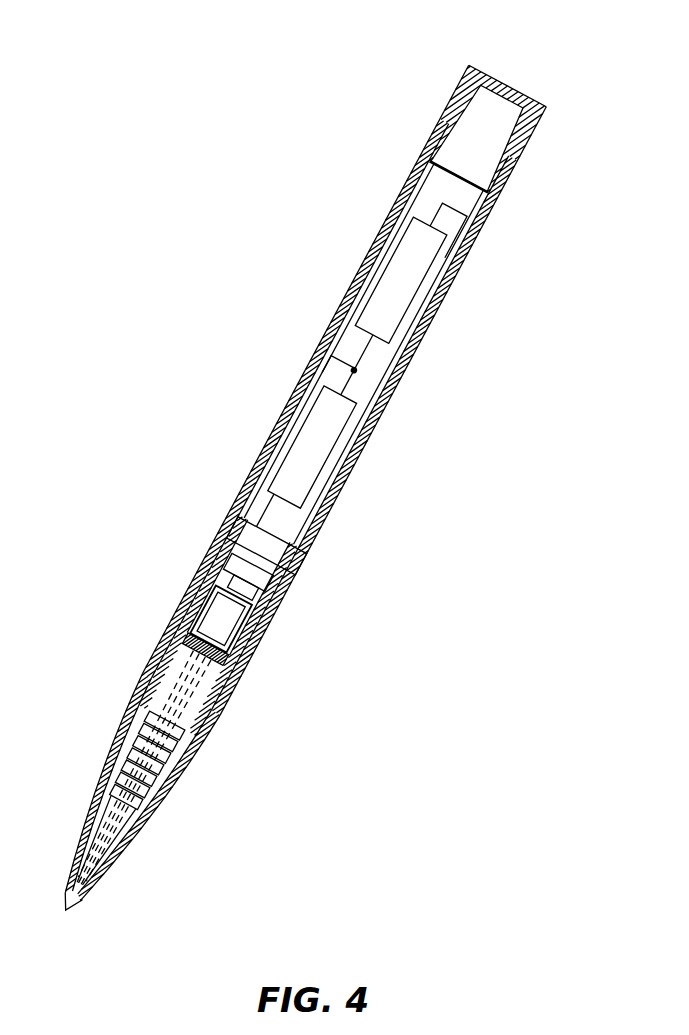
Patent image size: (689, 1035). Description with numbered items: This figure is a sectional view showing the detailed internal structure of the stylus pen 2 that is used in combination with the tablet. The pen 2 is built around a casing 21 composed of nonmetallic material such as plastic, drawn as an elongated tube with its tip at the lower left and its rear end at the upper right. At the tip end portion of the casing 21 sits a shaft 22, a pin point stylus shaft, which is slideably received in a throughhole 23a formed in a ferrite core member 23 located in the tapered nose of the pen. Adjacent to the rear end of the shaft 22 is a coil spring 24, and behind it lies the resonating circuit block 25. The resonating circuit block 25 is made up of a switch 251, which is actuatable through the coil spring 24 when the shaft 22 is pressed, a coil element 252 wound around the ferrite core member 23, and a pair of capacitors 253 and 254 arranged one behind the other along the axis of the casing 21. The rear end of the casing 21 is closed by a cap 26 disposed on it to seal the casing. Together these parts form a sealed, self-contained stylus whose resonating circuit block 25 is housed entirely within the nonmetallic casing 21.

The stylus pen 2 is at (332, 298).
The casing 21 is at (278, 444).
The shaft 22 is at (95, 858).
The ferrite core member 23 is at (147, 717).
The throughhole 23a is at (125, 853).
The coil spring 24 is at (228, 618).
The resonating circuit block 25 is at (582, 334).
The switch 251 is at (298, 575).
The coil element 252 is at (180, 760).
The capacitor 253 is at (398, 287).
The capacitor 254 is at (327, 427).
The cap 26 is at (498, 82).